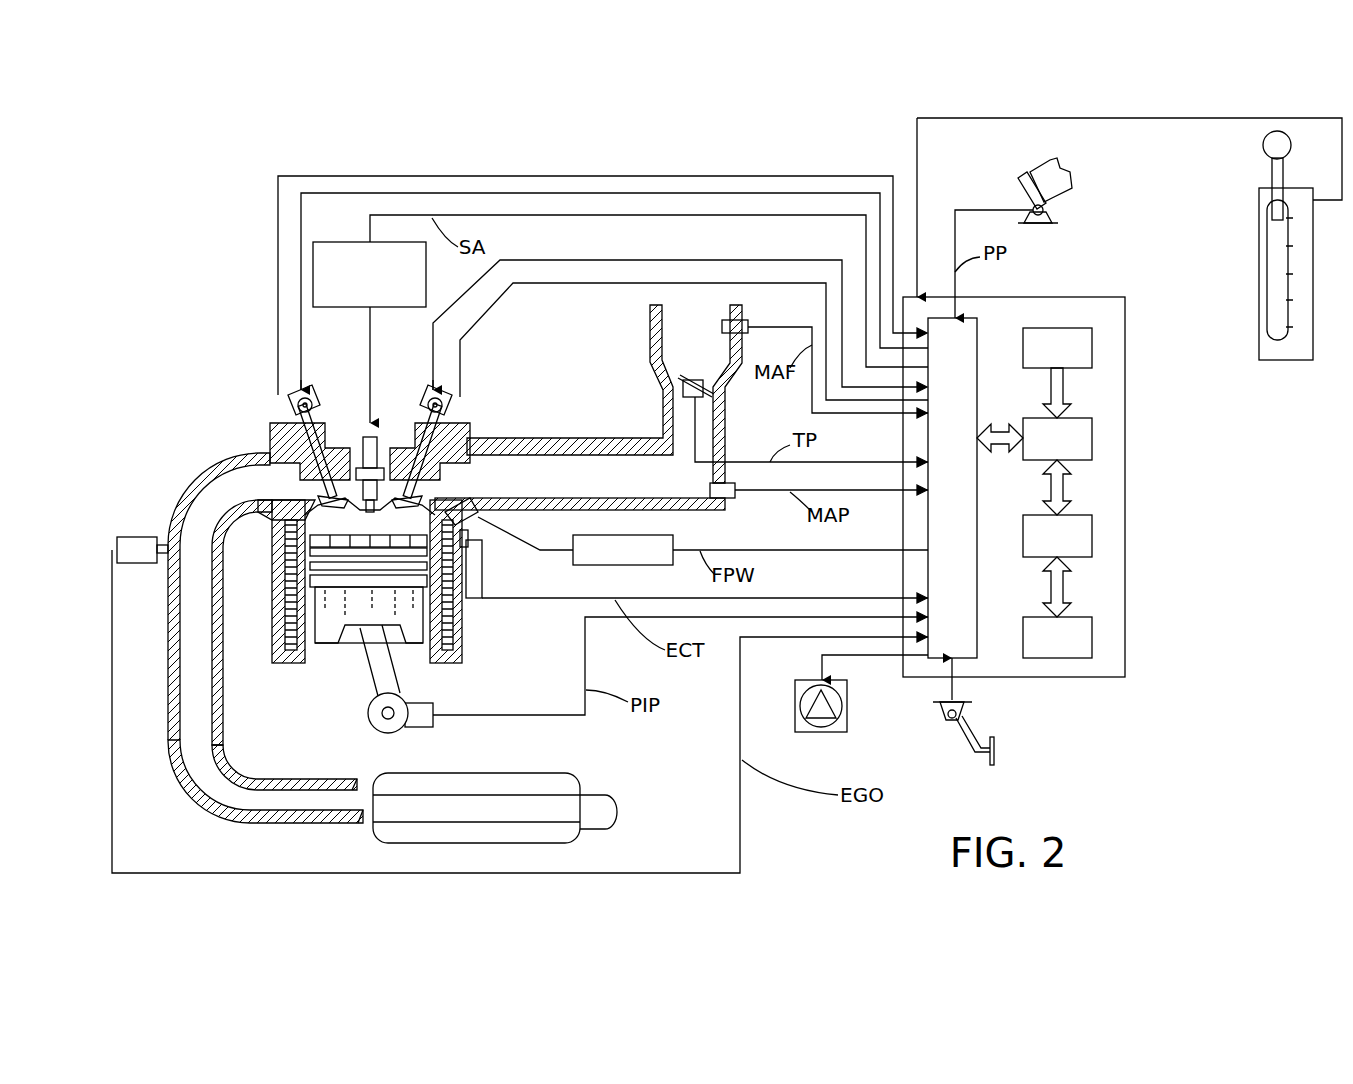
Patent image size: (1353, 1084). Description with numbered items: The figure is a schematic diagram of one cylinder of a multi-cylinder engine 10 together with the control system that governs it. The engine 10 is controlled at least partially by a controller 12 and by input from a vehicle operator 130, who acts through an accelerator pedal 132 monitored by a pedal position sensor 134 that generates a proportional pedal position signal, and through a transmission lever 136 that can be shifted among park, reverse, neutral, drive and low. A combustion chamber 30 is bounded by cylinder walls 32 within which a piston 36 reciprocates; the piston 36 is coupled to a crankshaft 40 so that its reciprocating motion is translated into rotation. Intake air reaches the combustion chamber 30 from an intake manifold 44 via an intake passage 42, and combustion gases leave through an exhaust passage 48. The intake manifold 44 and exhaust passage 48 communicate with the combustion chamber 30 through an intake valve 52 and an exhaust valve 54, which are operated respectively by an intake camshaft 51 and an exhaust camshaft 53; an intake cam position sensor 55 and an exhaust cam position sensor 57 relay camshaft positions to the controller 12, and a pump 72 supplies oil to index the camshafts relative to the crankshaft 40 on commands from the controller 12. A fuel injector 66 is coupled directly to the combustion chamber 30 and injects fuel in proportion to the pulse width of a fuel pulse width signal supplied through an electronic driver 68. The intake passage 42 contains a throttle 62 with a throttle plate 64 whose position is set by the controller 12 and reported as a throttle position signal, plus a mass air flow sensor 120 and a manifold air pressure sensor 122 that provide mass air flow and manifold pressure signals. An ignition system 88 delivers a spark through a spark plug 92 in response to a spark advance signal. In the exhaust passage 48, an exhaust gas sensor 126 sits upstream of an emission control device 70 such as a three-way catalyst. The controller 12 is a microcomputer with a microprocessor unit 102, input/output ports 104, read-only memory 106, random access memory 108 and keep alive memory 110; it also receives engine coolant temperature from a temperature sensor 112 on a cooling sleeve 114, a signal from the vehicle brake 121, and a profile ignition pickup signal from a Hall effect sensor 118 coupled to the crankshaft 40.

The engine 10 is at (208, 378).
The controller 12 is at (1125, 297).
The combustion chamber 30 is at (330, 535).
The cylinder walls 32 is at (305, 655).
The piston 36 is at (345, 632).
The crankshaft 40 is at (372, 725).
The intake passage 42 is at (678, 350).
The intake manifold 44 is at (616, 488).
The exhaust passage 48 is at (226, 495).
The intake camshaft 51 is at (430, 395).
The intake valve 52 is at (425, 480).
The exhaust camshaft 53 is at (305, 395).
The exhaust valve 54 is at (325, 500).
The intake cam position sensor 55 is at (450, 402).
The exhaust cam position sensor 57 is at (292, 402).
The throttle 62 is at (715, 388).
The throttle plate 64 is at (680, 386).
The fuel injector 66 is at (470, 520).
The electronic driver 68 is at (578, 565).
The emission control device 70 is at (540, 775).
The pump 72 is at (838, 660).
The ignition system 88 is at (320, 242).
The spark plug 92 is at (378, 440).
The microprocessor unit 102 is at (1092, 440).
The input/output ports 104 is at (980, 328).
The read-only memory 106 is at (1092, 345).
The random access memory 108 is at (1092, 537).
The keep alive memory 110 is at (1092, 638).
The temperature sensor 112 is at (482, 555).
The cooling sleeve 114 is at (452, 618).
The Hall effect sensor 118 is at (425, 727).
The mass air flow sensor 120 is at (745, 322).
The vehicle brake 121 is at (946, 716).
The manifold air pressure sensor 122 is at (736, 496).
The exhaust gas sensor 126 is at (117, 540).
The vehicle operator 130 is at (1066, 178).
The accelerator pedal 132 is at (1022, 188).
The pedal position sensor 134 is at (1058, 210).
The transmission lever 136 is at (1272, 175).